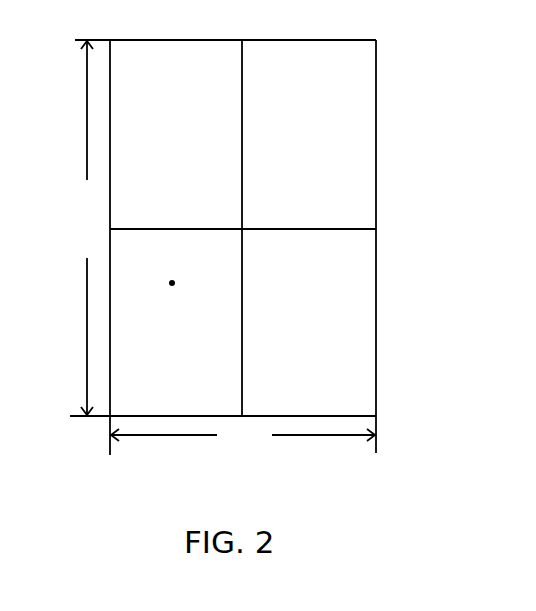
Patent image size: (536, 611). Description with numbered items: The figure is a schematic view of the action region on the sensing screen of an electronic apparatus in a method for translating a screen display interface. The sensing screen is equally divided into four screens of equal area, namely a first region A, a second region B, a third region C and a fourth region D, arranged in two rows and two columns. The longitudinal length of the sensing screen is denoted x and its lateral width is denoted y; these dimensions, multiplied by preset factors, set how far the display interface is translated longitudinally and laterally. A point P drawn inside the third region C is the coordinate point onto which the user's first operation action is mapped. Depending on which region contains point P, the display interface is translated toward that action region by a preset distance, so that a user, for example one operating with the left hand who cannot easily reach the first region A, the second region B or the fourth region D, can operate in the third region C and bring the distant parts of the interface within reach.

The first region A is at (176, 134).
The second region B is at (309, 134).
The third region C is at (176, 322).
The fourth region D is at (309, 322).
The point P p is at (184, 282).
The longitudinal length of the sensing screen x is at (85, 228).
The lateral width of the sensing screen y is at (243, 436).